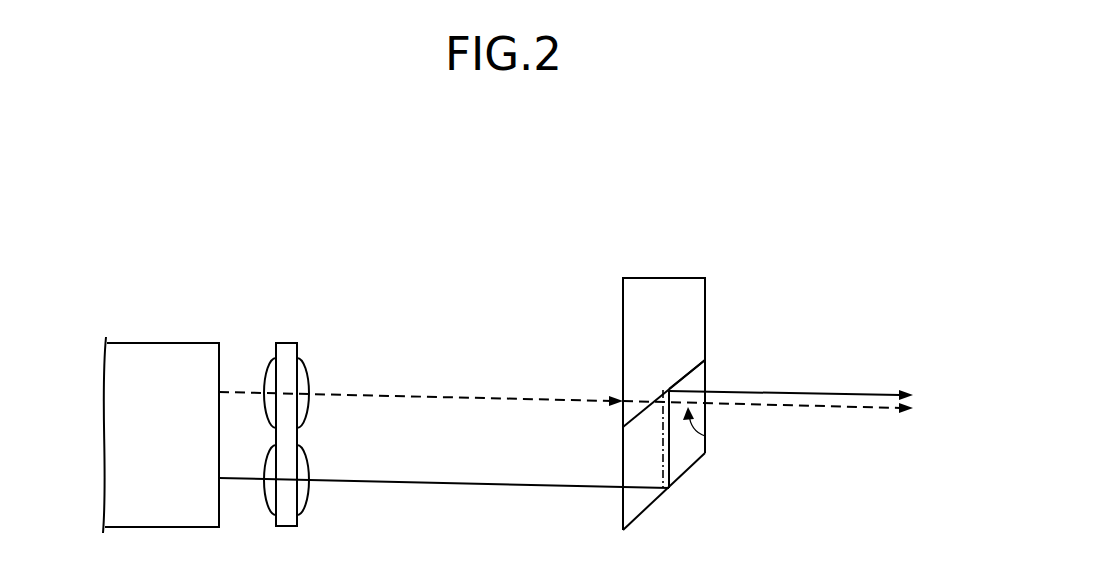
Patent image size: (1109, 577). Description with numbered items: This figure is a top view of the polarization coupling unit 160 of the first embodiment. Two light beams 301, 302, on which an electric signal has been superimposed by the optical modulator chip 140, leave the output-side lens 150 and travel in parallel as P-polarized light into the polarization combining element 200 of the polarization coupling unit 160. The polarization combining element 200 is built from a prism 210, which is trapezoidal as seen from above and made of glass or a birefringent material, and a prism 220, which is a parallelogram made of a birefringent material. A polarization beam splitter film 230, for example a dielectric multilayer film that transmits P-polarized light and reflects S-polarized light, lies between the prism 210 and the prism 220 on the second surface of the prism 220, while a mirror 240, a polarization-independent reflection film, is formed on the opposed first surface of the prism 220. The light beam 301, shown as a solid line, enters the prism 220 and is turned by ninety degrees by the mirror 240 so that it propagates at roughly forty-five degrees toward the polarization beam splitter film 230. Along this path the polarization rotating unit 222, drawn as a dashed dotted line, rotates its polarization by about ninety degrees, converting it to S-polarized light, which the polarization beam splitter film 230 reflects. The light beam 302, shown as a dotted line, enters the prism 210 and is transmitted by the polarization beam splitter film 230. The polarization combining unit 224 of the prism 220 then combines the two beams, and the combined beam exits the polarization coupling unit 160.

The optical modulator chip 140 is at (162, 367).
The output-side lens 150 is at (282, 343).
The polarization coupling unit 160 is at (749, 194).
The polarization combining element 200 is at (668, 266).
The prism 210 is at (705, 303).
The prism 220 is at (705, 375).
The polarization rotating unit 222 is at (663, 455).
The polarization combining unit 224 is at (705, 436).
The polarization beam splitter film 230 is at (684, 374).
The mirror 240 is at (645, 513).
The light beam 301 is at (450, 483).
The light beam 302 is at (452, 396).